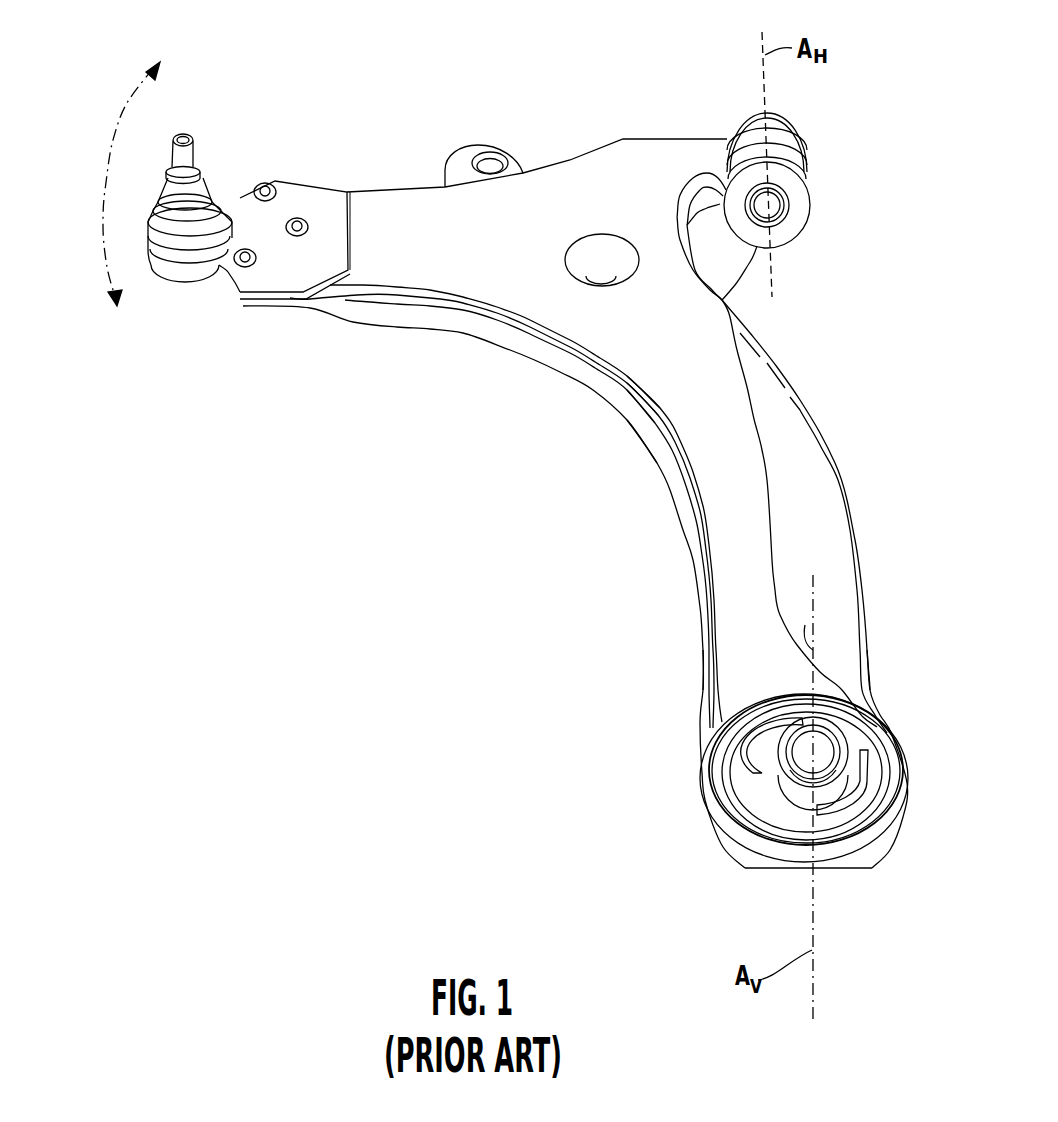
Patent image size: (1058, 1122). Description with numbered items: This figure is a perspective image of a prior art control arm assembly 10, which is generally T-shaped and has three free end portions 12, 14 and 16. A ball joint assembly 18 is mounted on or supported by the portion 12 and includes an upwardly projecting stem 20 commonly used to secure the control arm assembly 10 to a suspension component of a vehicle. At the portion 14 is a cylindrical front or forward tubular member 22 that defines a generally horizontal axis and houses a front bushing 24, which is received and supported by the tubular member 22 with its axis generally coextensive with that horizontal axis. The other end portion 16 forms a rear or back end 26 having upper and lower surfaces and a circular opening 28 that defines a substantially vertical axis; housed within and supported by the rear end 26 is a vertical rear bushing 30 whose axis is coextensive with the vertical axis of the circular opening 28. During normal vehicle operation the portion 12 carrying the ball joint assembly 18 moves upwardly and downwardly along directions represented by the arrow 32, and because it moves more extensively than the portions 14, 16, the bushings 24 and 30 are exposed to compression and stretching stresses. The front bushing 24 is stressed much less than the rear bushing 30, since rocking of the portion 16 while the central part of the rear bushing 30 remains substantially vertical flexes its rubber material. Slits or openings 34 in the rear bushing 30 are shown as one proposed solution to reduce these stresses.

The control arm assembly 10 is at (504, 489).
The free end portion 12 is at (282, 298).
The free end portion 14 is at (701, 157).
The free end portion 16 is at (727, 682).
The ball joint assembly 18 is at (212, 187).
The stem 20 is at (197, 148).
The front tubular member 22 is at (797, 203).
The front bushing 24 is at (788, 225).
The rear end 26 is at (703, 790).
The circular opening 28 is at (720, 833).
The rear bushing 30 is at (860, 810).
The arrow 32 is at (103, 257).
The slits or openings 34 is at (870, 775).